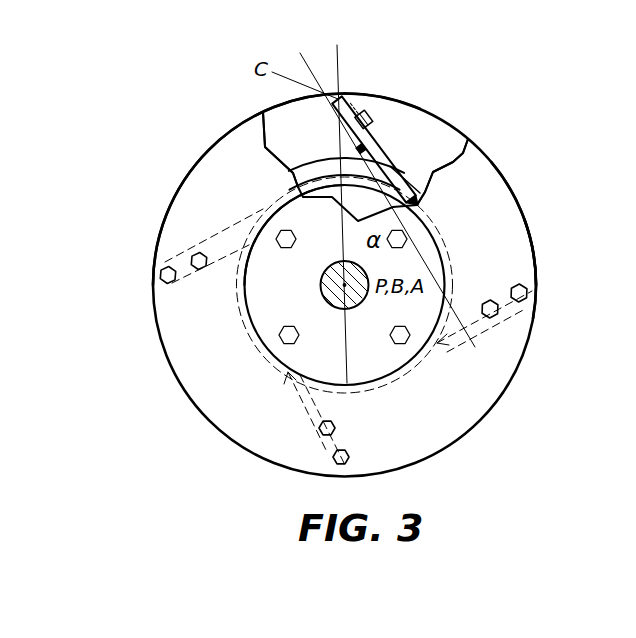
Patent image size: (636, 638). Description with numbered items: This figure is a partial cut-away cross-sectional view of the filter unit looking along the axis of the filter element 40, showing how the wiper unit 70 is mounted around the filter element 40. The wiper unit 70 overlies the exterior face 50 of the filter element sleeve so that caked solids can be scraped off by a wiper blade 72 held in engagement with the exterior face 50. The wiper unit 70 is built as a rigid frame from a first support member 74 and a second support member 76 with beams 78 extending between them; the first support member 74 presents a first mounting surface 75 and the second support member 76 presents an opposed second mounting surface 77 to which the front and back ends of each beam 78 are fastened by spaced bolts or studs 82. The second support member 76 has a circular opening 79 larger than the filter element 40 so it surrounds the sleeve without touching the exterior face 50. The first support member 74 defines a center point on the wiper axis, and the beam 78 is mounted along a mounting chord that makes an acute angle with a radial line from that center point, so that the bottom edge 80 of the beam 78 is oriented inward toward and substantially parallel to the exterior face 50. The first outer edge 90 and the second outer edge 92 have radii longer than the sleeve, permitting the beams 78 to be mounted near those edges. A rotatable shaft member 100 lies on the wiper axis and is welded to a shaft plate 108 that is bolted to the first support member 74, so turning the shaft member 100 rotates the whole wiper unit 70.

The filter element 40 is at (262, 211).
The exterior face 50 is at (267, 203).
The wiper unit 70 is at (530, 226).
The wiper blade 72 is at (378, 150).
The first support member 74 is at (498, 198).
The first mounting surface 75 is at (498, 170).
The second support member 76 is at (422, 118).
The second mounting surface 77 is at (443, 133).
The beams 78 is at (183, 263).
The circular opening 79 is at (265, 147).
The bottom edge 80 is at (370, 133).
The bolts or studs 82 is at (493, 315).
The first outer edge 90 is at (210, 140).
The second outer edge 92 is at (382, 93).
The rotatable shaft member 100 is at (346, 287).
The shaft plate 108 is at (377, 382).